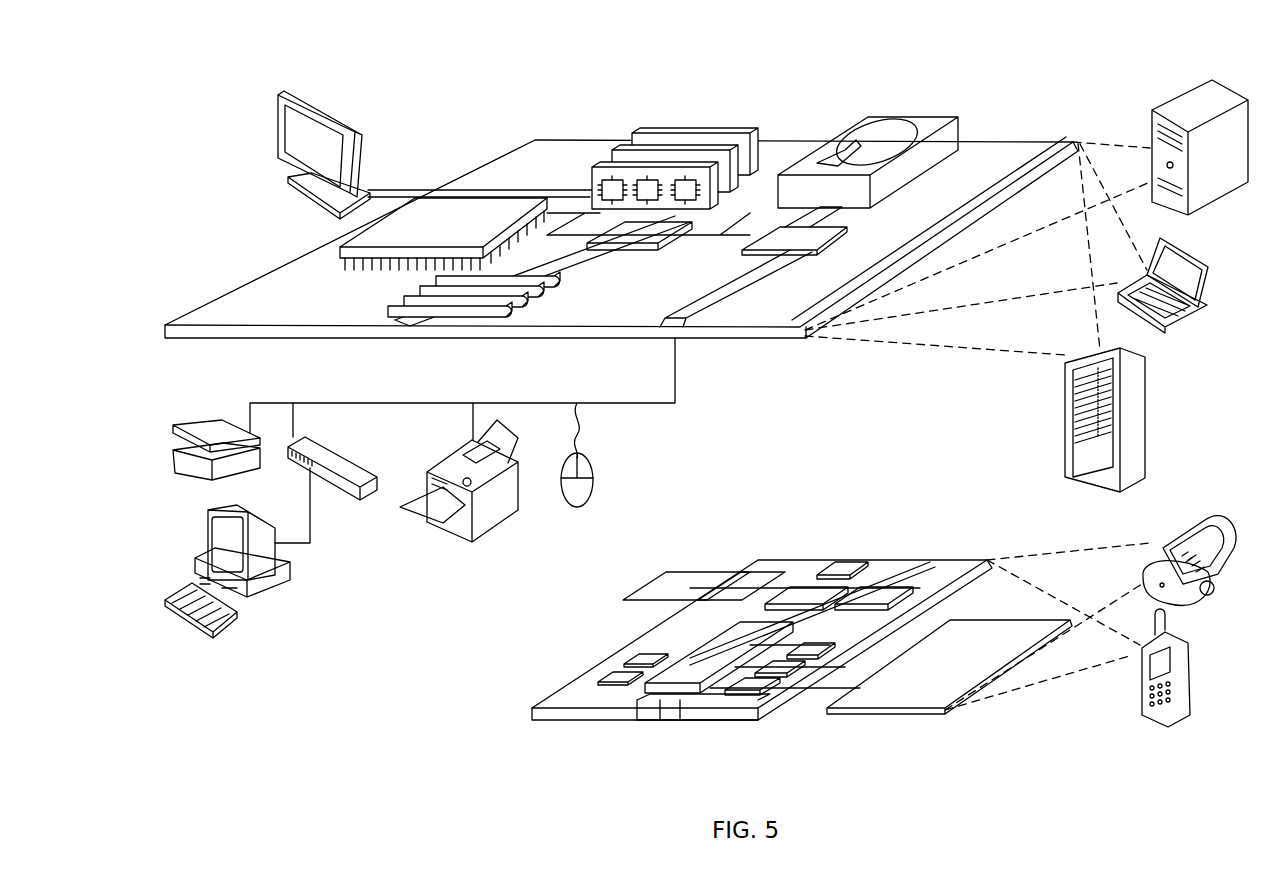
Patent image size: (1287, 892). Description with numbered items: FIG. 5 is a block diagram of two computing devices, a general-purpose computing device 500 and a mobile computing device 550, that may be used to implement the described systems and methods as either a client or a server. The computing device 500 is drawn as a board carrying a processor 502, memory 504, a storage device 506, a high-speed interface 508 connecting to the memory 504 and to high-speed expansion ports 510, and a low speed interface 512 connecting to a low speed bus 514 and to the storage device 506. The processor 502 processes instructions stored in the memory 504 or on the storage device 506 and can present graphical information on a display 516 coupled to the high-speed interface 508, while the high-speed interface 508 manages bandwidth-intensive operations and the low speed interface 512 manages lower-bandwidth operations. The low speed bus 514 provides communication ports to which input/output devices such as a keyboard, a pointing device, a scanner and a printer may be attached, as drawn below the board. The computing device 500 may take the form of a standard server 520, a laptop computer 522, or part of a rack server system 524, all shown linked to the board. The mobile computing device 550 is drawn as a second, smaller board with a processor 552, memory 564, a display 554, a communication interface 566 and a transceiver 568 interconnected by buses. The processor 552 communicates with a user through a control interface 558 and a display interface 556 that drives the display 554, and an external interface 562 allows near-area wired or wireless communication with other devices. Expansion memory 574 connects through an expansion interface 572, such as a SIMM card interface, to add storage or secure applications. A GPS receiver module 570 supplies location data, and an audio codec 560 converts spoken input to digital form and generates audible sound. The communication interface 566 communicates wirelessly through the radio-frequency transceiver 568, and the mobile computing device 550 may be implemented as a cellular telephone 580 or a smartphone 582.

The computing device 500 is at (463, 116).
The processor 502 is at (340, 247).
The memory 504 is at (650, 133).
The storage device 506 is at (858, 119).
The high-speed interface 508 is at (620, 235).
The high-speed expansion ports 510 is at (395, 300).
The low speed interface 512 is at (770, 227).
The low speed bus 514 is at (703, 338).
The display 516 is at (277, 94).
The standard server 520 is at (1150, 118).
The laptop computer 522 is at (1212, 263).
The rack server system 524 is at (1066, 444).
The computing device 550 is at (503, 718).
The processor 552 is at (694, 683).
The display 554 is at (926, 697).
The display interface 556 is at (757, 692).
The control interface 558 is at (798, 675).
The audio codec 560 is at (812, 656).
The external interface 562 is at (661, 712).
The memory 564 is at (620, 677).
The communication interface 566 is at (803, 594).
The transceiver 568 is at (877, 597).
The GPS receiver module 570 is at (845, 562).
The expansion interface 572 is at (740, 572).
The expansion memory 574 is at (670, 572).
The cellular telephone 580 is at (1194, 523).
The smartphone 582 is at (1142, 690).